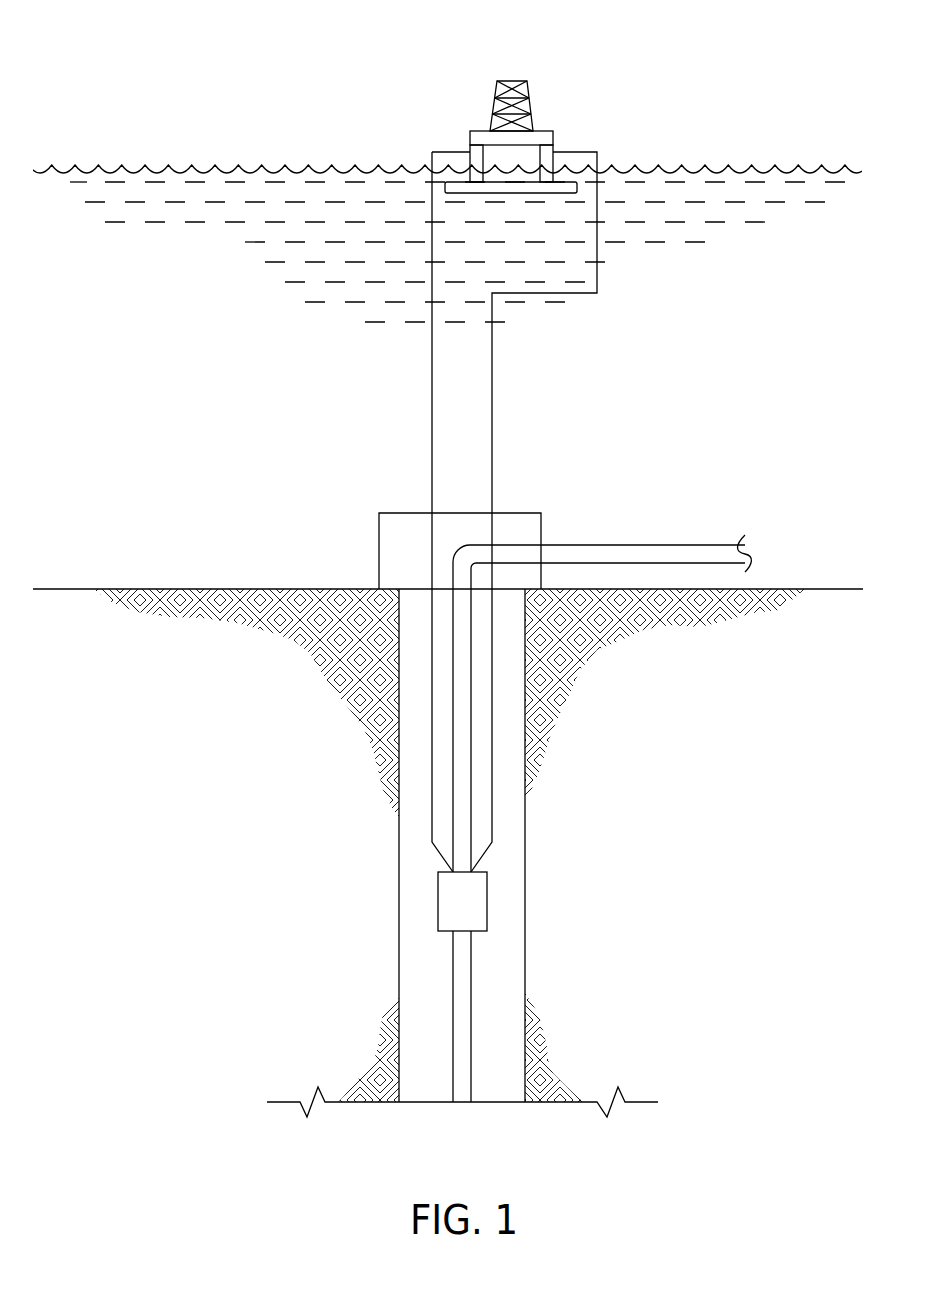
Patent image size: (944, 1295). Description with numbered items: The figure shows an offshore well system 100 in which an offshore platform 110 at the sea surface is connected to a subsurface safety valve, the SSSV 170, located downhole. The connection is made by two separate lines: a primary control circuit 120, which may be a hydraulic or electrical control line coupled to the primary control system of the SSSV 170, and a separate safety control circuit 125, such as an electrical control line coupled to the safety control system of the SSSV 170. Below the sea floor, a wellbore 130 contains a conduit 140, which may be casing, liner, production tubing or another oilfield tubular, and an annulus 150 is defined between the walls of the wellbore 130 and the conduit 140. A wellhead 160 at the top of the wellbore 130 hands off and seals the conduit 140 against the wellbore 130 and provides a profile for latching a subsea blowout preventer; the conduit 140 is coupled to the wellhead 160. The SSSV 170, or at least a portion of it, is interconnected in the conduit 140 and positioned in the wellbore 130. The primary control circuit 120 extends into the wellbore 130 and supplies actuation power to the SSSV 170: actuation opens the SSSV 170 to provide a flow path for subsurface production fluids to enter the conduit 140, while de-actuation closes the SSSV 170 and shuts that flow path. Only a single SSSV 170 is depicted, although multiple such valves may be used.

The well system 100 is at (531, 104).
The offshore platform 110 is at (468, 136).
The primary control circuit 120 is at (432, 445).
The safety control circuit 125 is at (492, 445).
The wellbore 130 is at (525, 952).
The conduit 140 is at (472, 832).
The annulus 150 is at (517, 815).
The wellhead 160 is at (379, 553).
The SSSV 170 is at (487, 902).